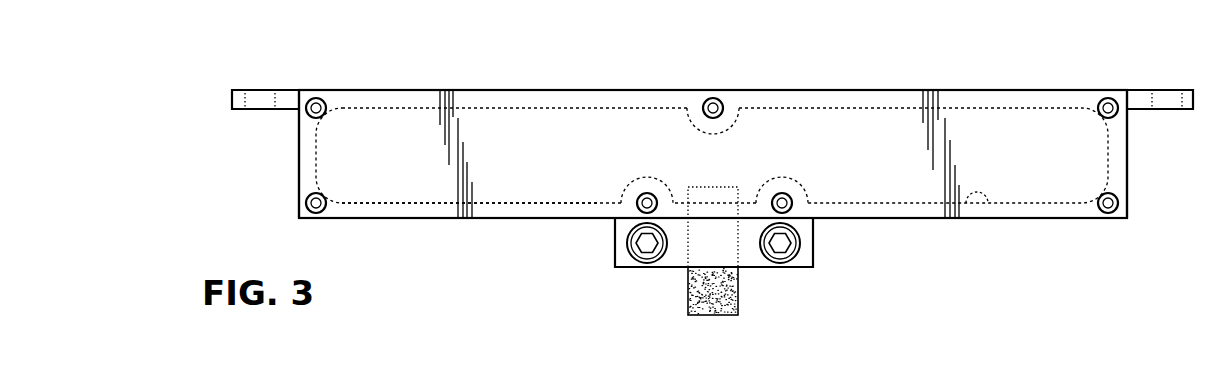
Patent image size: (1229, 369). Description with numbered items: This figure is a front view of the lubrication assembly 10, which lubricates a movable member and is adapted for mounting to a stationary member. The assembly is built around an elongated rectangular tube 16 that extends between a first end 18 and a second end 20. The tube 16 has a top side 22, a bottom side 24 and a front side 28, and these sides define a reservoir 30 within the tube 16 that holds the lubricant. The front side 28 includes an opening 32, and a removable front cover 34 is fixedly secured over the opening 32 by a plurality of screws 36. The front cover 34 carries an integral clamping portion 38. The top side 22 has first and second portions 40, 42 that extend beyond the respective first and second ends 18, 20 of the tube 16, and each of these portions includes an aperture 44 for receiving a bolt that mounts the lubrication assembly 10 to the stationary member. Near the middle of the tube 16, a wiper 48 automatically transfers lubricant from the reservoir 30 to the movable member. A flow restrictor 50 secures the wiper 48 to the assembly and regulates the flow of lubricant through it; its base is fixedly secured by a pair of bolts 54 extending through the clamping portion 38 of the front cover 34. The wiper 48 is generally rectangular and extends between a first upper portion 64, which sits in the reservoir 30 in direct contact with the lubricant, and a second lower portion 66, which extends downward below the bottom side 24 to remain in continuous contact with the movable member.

The lubrication assembly 10 is at (961, 66).
The elongated rectangular tube 16 is at (1127, 172).
The first end 18 is at (299, 155).
The second end 20 is at (1127, 137).
The top side 22 is at (497, 90).
The bottom side 24 is at (373, 220).
The front side 28 is at (857, 164).
The reservoir 30 is at (988, 206).
The opening 32 is at (1037, 205).
The removable front cover 34 is at (512, 193).
The screws 36 is at (316, 98).
The clamping portion 38 is at (752, 260).
The first portion 40 is at (240, 93).
The second portion 42 is at (1188, 100).
The aperture 44 is at (249, 100).
The wiper 48 is at (690, 275).
The flow restrictor 50 is at (812, 277).
The bolts 54 is at (633, 238).
The first upper portion 64 is at (718, 187).
The second lower portion 66 is at (715, 318).